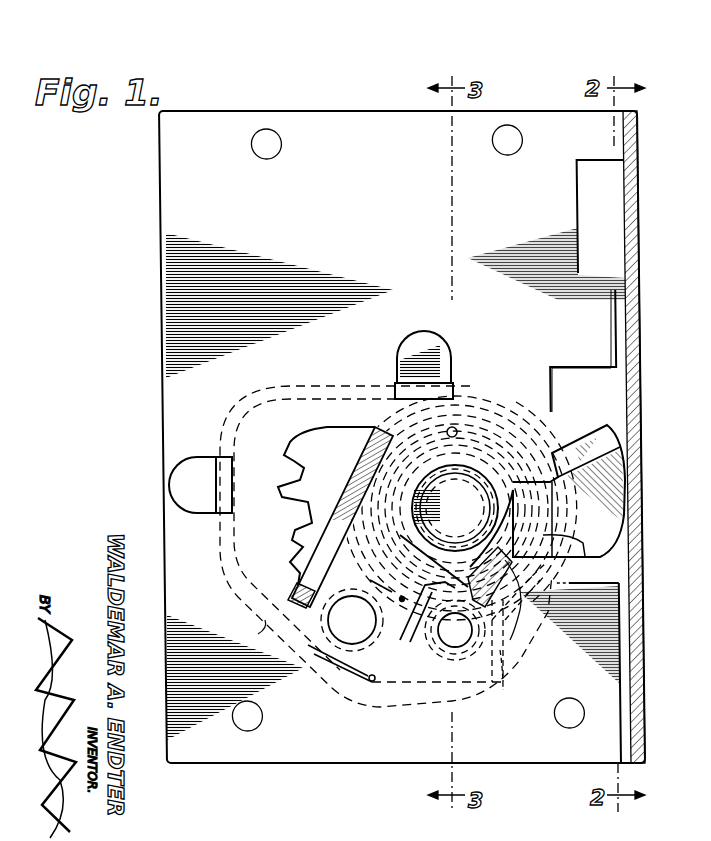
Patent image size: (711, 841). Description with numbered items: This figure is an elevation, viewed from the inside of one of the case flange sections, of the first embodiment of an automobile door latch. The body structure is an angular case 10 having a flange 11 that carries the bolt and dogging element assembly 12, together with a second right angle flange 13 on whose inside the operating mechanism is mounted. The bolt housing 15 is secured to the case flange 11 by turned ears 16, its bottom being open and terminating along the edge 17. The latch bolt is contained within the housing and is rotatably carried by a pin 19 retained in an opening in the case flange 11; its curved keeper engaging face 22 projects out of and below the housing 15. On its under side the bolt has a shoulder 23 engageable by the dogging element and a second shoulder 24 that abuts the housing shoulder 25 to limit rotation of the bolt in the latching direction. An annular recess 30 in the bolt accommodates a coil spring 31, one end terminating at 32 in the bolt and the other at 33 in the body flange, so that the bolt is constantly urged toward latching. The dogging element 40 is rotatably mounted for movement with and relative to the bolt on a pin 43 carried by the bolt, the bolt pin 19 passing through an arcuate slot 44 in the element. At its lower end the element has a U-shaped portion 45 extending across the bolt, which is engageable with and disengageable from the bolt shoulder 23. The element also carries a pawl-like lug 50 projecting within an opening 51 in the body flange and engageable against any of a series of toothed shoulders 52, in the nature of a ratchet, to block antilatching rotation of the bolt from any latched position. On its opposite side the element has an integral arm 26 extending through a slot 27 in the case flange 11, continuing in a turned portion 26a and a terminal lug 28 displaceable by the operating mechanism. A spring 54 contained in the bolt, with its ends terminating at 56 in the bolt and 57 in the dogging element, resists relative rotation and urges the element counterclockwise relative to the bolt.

The case 10 is at (636, 258).
The flange 11 is at (166, 297).
The bolt and dogging element assembly 12 is at (551, 426).
The second right angle flange 13 is at (641, 555).
The bolt housing 15 is at (233, 412).
The turned ears 16 is at (433, 352).
The edge 17 is at (262, 633).
The pin 19 is at (455, 508).
The keeper engaging face 22 is at (395, 703).
The shoulder 23 is at (503, 668).
The second shoulder 24 is at (527, 590).
The housing shoulder 25 is at (514, 620).
The arm 26 is at (575, 550).
The turned portion 26a is at (612, 472).
The slot 27 is at (528, 573).
The terminal lug 28 is at (607, 433).
The annular recess 30 is at (478, 422).
The coil spring 31 is at (490, 428).
The spring end 32 is at (403, 643).
The spring end 33 is at (455, 427).
The dogging element 40 is at (356, 562).
The pin 43 is at (457, 645).
The arcuate slot 44 is at (393, 502).
The U-shaped portion 45 is at (503, 690).
The lug 50 is at (292, 598).
The opening 51 is at (324, 430).
The toothed shoulders 52 is at (300, 490).
The spring 54 is at (310, 648).
The spring end 56 is at (402, 598).
The spring end 57 is at (371, 681).